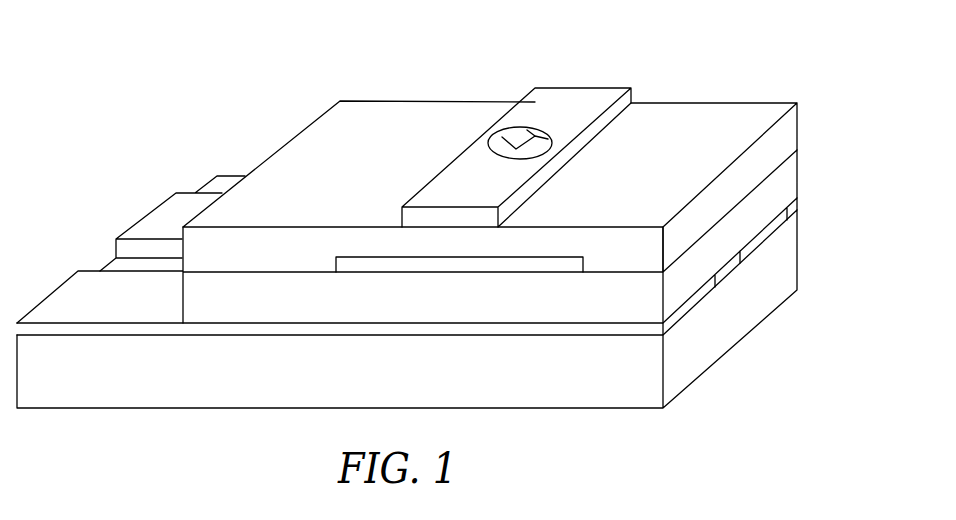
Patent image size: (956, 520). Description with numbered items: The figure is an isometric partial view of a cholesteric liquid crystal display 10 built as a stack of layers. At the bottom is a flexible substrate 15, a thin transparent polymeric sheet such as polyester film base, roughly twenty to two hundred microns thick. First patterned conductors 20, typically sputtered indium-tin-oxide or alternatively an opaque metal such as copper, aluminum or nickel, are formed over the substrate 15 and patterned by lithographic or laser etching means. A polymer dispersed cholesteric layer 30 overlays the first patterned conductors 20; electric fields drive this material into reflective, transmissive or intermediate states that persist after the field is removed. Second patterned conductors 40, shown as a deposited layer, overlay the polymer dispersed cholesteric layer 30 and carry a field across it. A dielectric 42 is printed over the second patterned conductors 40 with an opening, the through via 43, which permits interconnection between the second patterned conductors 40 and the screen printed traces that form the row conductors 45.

The display 10 is at (312, 55).
The flexible substrate 15 is at (688, 357).
The first patterned conductors 20 is at (699, 292).
The polymer dispersed cholesteric layer 30 is at (787, 178).
The second patterned conductors 40 is at (382, 267).
The dielectric 42 is at (788, 131).
The through via 43 is at (492, 142).
The row conductors 45 is at (575, 97).